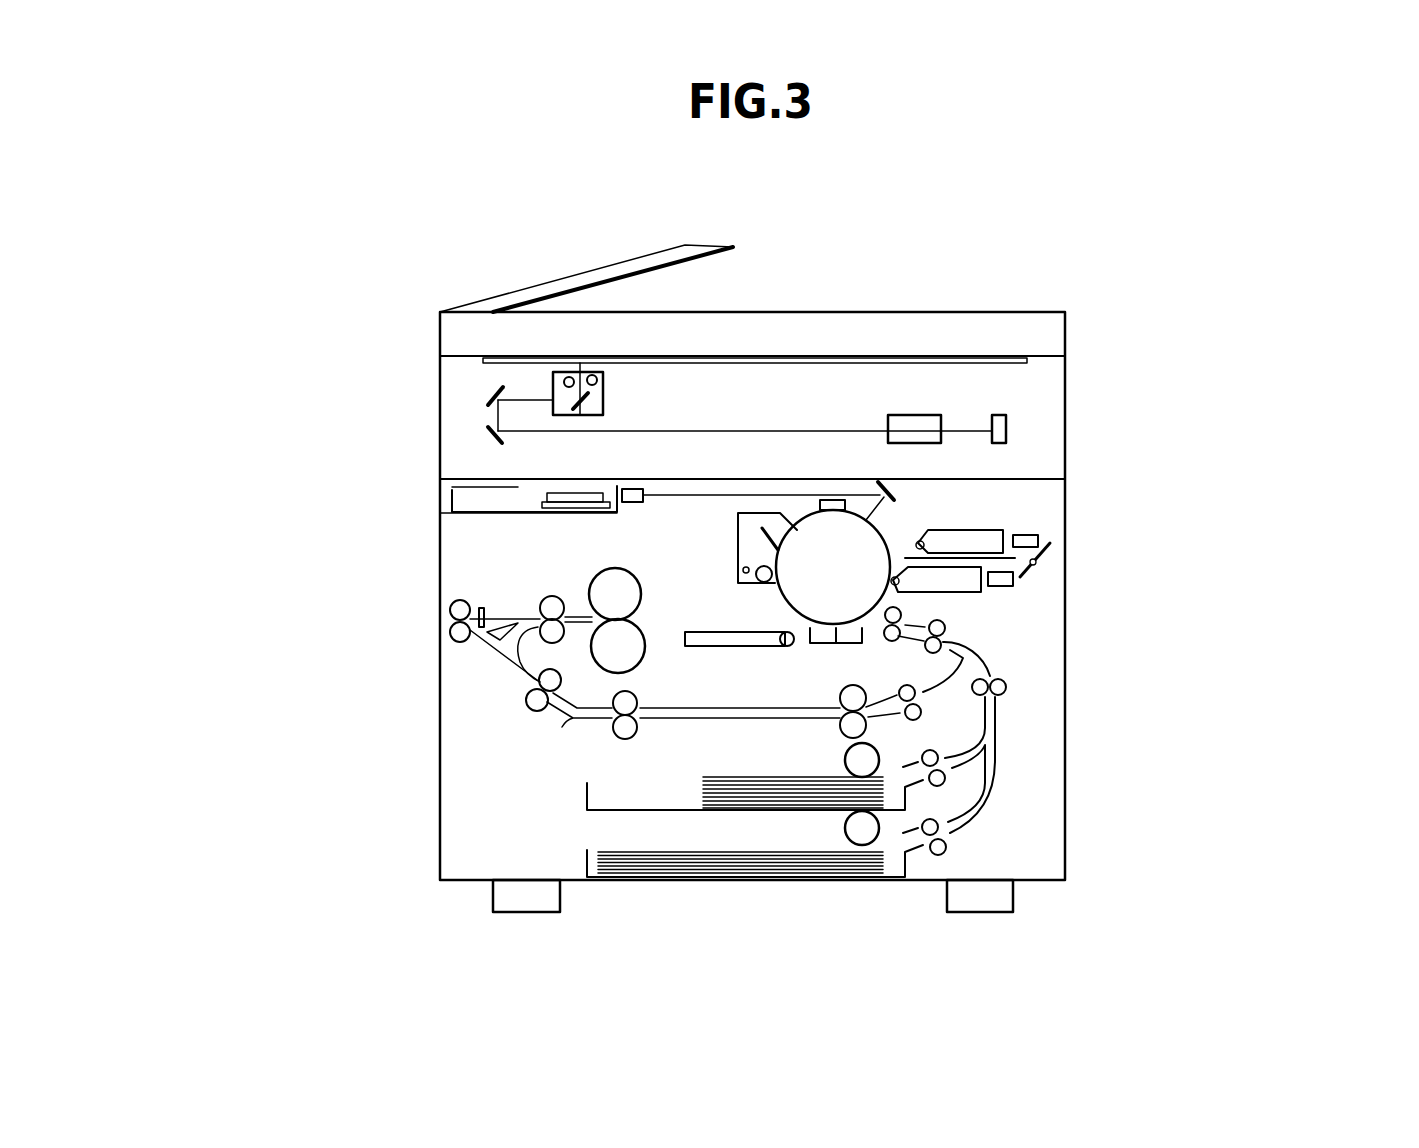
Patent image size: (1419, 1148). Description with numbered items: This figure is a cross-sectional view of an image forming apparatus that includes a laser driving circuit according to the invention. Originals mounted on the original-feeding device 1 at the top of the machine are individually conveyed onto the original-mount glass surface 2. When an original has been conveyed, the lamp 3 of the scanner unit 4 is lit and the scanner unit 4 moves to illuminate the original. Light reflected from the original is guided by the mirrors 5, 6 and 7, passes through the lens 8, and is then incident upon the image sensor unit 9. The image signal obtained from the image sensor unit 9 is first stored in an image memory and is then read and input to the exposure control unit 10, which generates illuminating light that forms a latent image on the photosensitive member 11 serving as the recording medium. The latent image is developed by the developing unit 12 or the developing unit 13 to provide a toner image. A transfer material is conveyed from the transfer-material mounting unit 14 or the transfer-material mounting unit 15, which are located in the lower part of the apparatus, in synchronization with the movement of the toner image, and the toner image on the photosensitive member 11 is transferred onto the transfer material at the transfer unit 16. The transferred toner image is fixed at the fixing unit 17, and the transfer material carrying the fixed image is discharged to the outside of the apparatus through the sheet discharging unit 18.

The original-feeding device 1 is at (612, 262).
The original-mount glass surface 2 is at (962, 357).
The lamp 3 is at (593, 372).
The scanner unit 4 is at (642, 303).
The mirror 5 is at (451, 337).
The mirror 6 is at (493, 393).
The mirror 7 is at (493, 437).
The lens 8 is at (808, 518).
The image sensor unit 9 is at (1006, 425).
The exposure control unit 10 is at (540, 480).
The photosensitive member 11 is at (888, 520).
The developing unit 12 is at (990, 523).
The developing unit 13 is at (958, 594).
The transfer-material mounting unit 14 is at (585, 793).
The transfer-material mounting unit 15 is at (585, 858).
The transfer unit 16 is at (826, 645).
The fixing unit 17 is at (651, 620).
The sheet discharging unit 18 is at (450, 634).